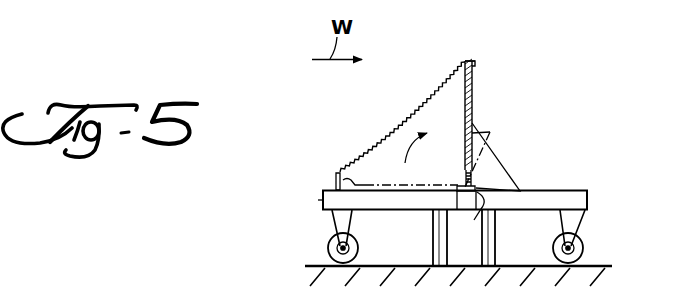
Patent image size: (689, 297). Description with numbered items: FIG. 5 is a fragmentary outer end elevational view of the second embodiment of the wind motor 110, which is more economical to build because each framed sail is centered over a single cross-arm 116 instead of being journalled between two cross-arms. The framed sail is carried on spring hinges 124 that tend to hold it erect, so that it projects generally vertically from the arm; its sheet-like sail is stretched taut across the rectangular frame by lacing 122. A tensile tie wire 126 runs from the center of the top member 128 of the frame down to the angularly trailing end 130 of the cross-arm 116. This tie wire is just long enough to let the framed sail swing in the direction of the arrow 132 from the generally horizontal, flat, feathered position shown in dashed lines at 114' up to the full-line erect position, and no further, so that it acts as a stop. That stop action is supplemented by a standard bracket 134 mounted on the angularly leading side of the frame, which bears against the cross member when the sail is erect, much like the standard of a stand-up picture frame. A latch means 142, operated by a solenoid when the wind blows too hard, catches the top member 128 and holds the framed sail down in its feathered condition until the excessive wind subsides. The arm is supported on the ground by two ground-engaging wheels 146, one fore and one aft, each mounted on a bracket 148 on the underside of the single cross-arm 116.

The second embodiment of the invention 110 is at (523, 73).
The feathered position of the framed sail 114' is at (409, 169).
The cross-arm 116 is at (588, 203).
The lacing 122 is at (473, 103).
The spring hinges 124 is at (477, 215).
The tensile tie wire 126 is at (413, 114).
The top member of the frame 128 is at (468, 61).
The angularly trailing end of the cross-arm 130 is at (323, 202).
The arrow 132 is at (448, 154).
The standard bracket 134 is at (497, 162).
The latch means 142 is at (335, 175).
The ground-engaging wheels 146 is at (358, 243).
The brackets 148 is at (582, 222).